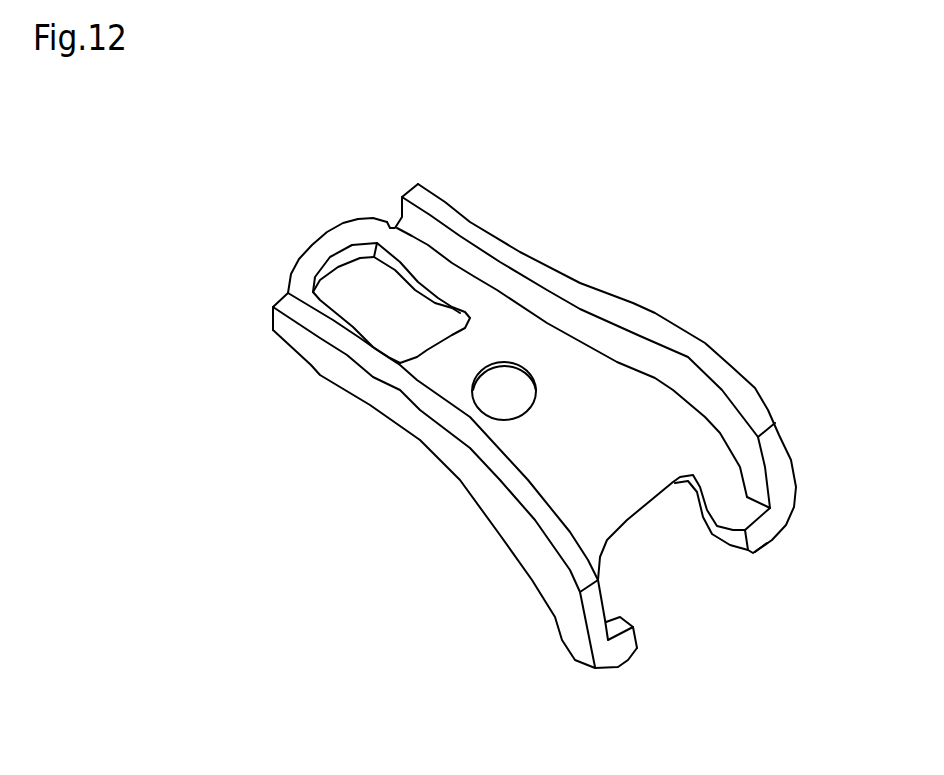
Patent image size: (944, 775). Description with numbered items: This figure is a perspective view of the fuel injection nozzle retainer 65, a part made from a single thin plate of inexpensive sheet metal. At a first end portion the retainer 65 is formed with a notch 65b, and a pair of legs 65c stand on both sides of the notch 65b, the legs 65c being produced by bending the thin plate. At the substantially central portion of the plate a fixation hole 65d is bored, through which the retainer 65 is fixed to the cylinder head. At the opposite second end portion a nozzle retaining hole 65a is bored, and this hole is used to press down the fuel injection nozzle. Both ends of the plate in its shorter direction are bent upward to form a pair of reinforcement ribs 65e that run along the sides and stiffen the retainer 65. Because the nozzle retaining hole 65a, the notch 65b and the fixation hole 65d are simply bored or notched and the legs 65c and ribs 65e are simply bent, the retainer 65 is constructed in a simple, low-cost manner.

The fuel injection nozzle retainer 65 is at (571, 423).
The nozzle retaining hole 65a is at (353, 253).
The notch 65b is at (663, 547).
The legs 65c is at (757, 530).
The fixation hole 65d is at (515, 392).
The reinforcement ribs 65e is at (492, 245).